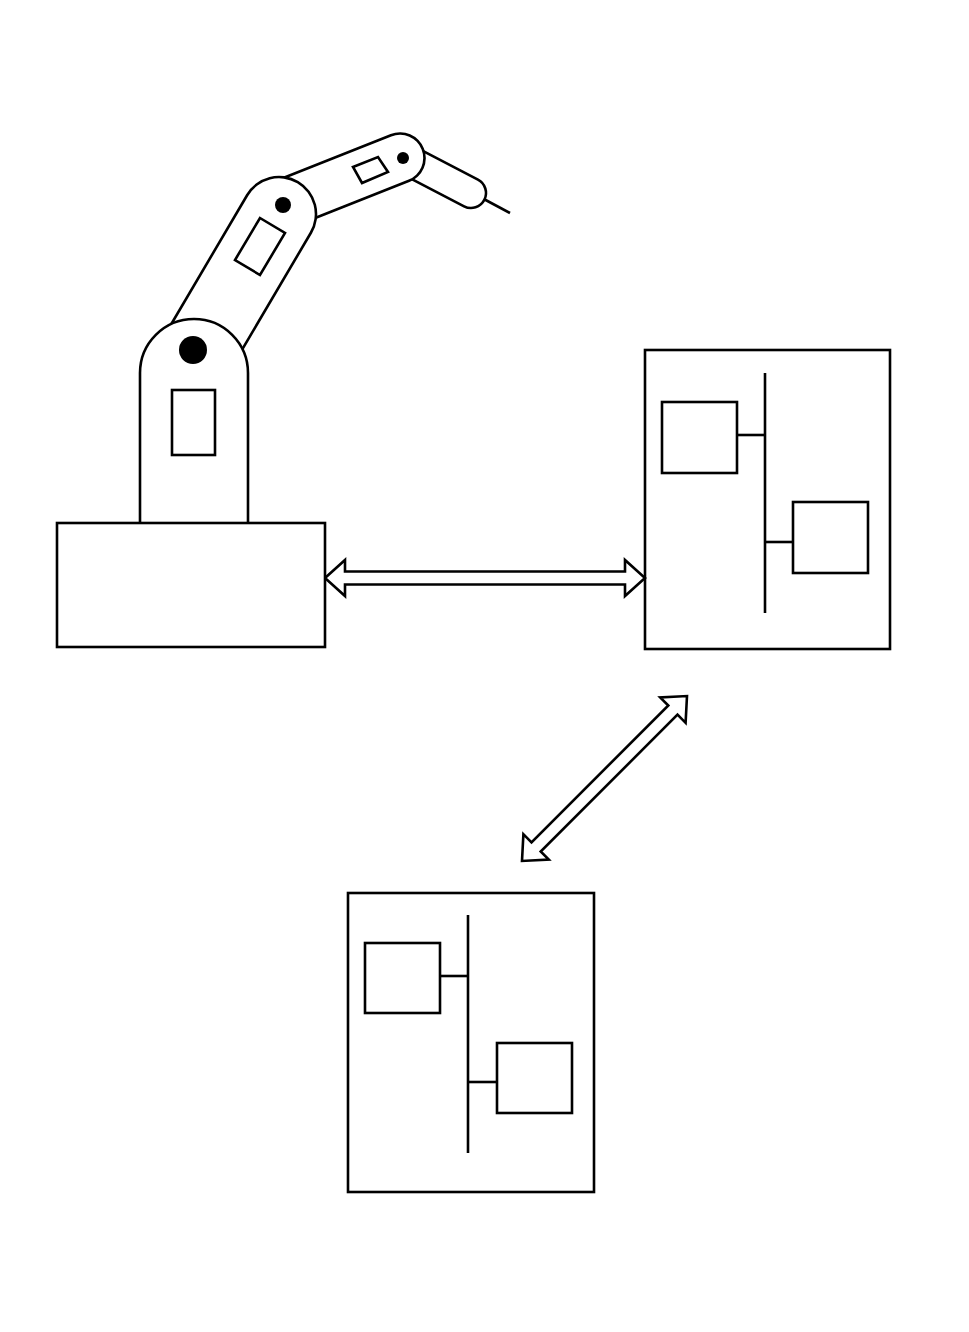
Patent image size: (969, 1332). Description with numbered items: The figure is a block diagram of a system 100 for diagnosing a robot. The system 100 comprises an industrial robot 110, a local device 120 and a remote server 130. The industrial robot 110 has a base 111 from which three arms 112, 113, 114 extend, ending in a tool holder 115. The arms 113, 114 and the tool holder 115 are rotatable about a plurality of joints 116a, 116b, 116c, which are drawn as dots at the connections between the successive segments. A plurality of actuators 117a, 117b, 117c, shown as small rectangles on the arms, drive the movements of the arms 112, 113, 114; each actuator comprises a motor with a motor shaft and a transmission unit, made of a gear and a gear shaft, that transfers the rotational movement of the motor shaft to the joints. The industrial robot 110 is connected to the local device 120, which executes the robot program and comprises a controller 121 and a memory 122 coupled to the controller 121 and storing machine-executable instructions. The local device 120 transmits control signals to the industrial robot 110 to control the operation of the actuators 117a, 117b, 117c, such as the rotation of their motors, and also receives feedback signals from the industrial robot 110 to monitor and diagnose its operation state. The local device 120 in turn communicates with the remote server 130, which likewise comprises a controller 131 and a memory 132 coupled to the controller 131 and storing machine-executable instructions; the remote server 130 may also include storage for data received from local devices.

The system 100 is at (790, 42).
The industrial robot 110 is at (163, 116).
The base 111 is at (285, 522).
The arm 112 is at (248, 414).
The arm 113 is at (271, 297).
The arm 114 is at (376, 201).
The tool holder 115 is at (462, 170).
The joint 116a is at (178, 351).
The joint 116b is at (274, 204).
The joint 116c is at (398, 155).
The actuator 117a is at (172, 432).
The actuator 117b is at (236, 259).
The actuator 117c is at (354, 177).
The local device 120 is at (798, 292).
The controller 121 is at (717, 450).
The memory 122 is at (851, 552).
The remote server 130 is at (337, 850).
The controller 131 is at (421, 992).
The memory 132 is at (554, 1092).